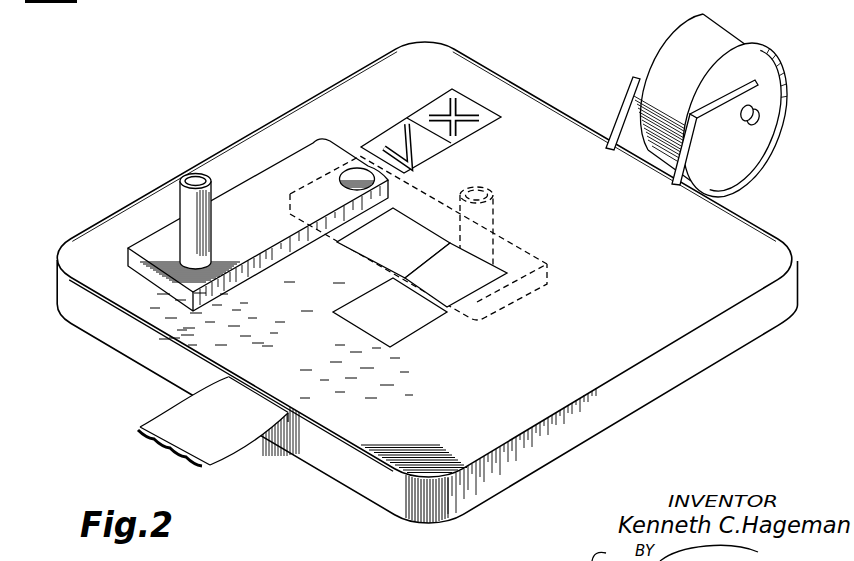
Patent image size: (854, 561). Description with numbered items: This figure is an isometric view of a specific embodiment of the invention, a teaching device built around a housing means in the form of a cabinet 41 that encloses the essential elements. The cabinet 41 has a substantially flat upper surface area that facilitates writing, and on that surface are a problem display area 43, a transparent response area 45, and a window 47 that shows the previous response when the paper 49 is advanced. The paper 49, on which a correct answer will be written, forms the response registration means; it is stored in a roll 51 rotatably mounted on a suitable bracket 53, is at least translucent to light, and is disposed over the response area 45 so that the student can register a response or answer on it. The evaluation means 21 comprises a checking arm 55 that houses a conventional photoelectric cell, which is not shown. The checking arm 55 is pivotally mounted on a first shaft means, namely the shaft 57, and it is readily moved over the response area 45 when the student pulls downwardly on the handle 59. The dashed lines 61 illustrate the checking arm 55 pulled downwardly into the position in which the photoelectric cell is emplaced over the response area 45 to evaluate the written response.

The evaluation means 21 is at (288, 120).
The cabinet 41 is at (378, 82).
The problem display area 43 is at (428, 236).
The response area 45 is at (493, 280).
The window 47 is at (417, 320).
The paper 49 is at (166, 422).
The roll 51 is at (785, 80).
The bracket 53 is at (622, 97).
The checking arm 55 is at (281, 261).
The shaft 57 is at (356, 178).
The handle 59 is at (192, 175).
The dashed lines 61 is at (433, 198).